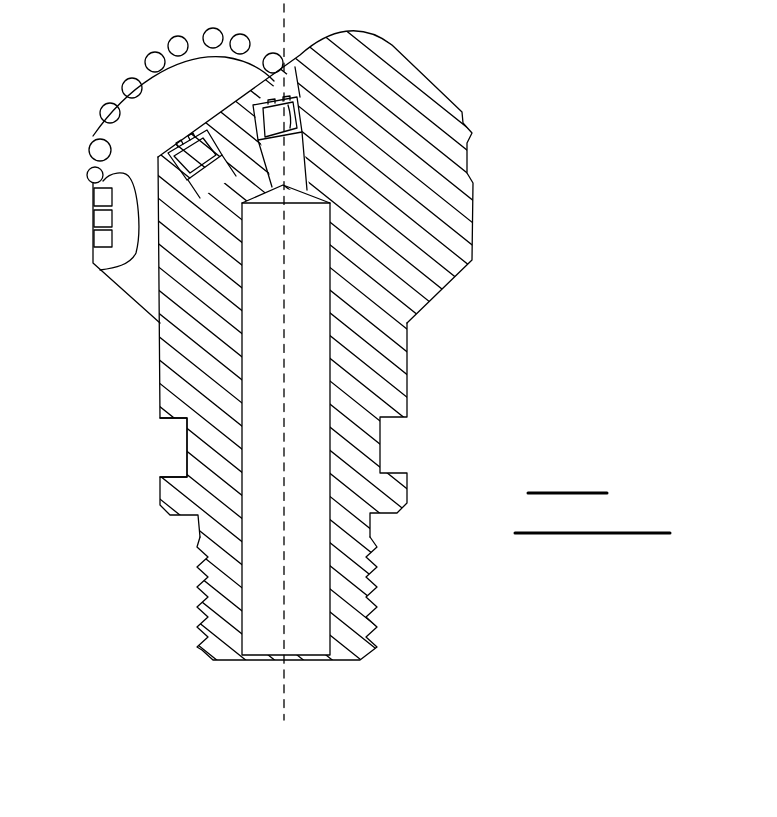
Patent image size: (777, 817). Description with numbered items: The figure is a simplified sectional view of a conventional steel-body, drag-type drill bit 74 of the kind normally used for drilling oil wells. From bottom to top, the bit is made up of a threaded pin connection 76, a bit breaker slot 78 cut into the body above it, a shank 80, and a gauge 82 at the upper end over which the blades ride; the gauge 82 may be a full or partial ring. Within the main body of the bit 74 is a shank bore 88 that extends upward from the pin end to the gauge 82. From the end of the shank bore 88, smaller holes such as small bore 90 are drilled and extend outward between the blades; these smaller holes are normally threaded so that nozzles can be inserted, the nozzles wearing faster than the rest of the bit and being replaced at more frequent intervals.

The steel-body drag-type drill bit 74 is at (500, 58).
The threaded pin connection 76 is at (202, 594).
The bit breaker slot 78 is at (187, 447).
The shank 80 is at (408, 368).
The gauge 82 is at (473, 214).
The shank bore 88 is at (306, 585).
The small bore 90 is at (168, 150).